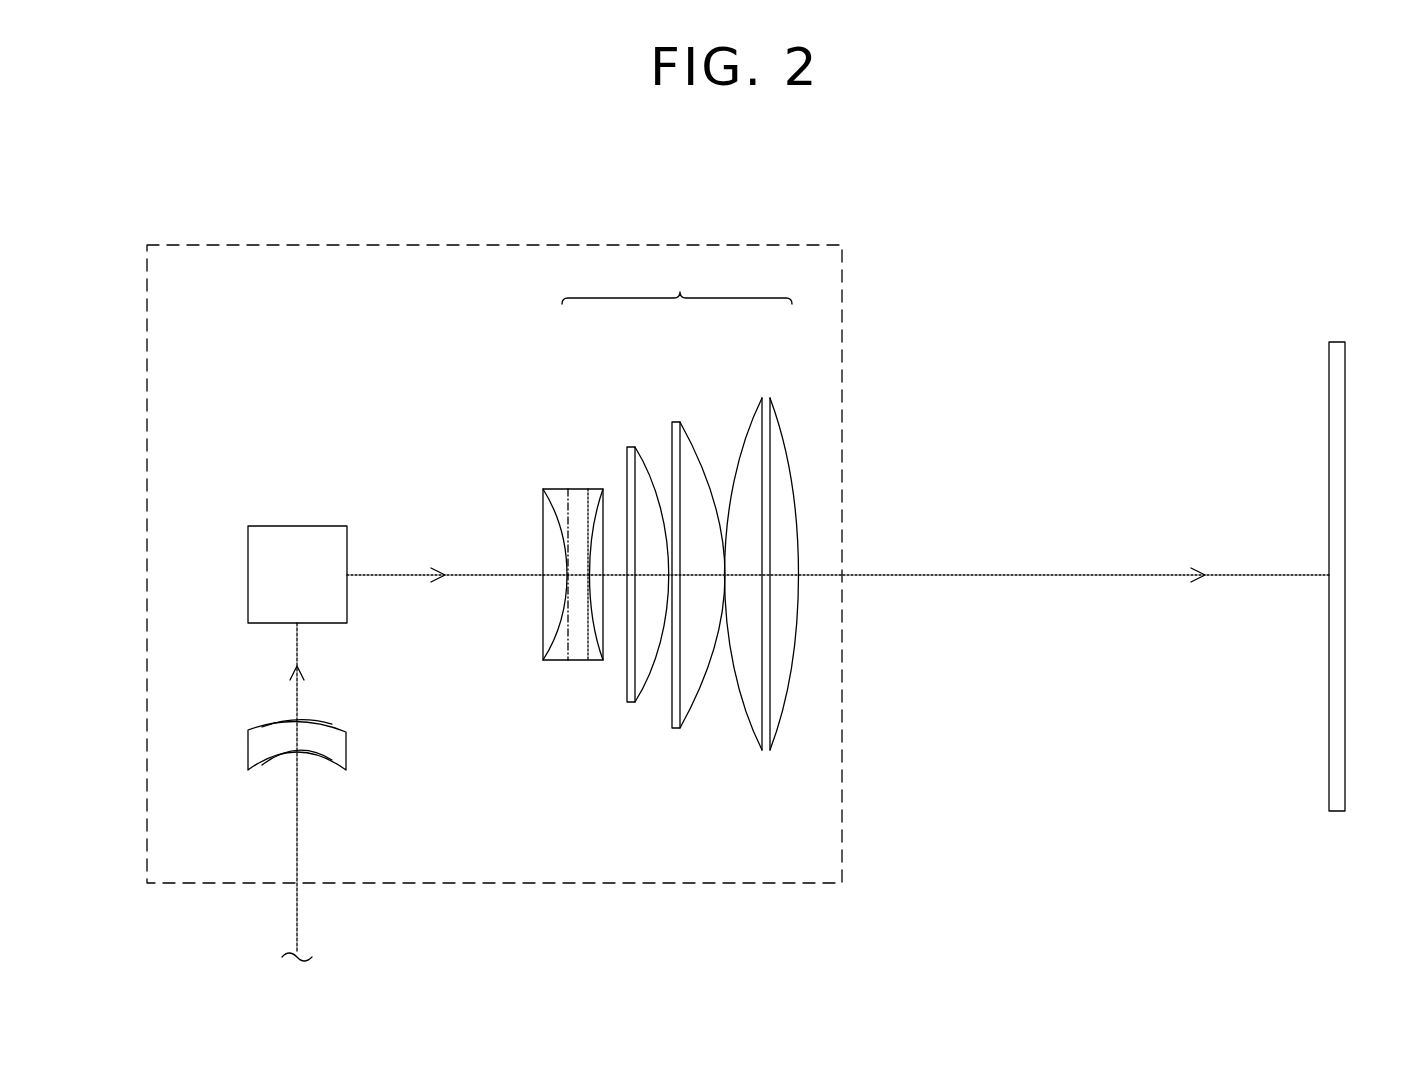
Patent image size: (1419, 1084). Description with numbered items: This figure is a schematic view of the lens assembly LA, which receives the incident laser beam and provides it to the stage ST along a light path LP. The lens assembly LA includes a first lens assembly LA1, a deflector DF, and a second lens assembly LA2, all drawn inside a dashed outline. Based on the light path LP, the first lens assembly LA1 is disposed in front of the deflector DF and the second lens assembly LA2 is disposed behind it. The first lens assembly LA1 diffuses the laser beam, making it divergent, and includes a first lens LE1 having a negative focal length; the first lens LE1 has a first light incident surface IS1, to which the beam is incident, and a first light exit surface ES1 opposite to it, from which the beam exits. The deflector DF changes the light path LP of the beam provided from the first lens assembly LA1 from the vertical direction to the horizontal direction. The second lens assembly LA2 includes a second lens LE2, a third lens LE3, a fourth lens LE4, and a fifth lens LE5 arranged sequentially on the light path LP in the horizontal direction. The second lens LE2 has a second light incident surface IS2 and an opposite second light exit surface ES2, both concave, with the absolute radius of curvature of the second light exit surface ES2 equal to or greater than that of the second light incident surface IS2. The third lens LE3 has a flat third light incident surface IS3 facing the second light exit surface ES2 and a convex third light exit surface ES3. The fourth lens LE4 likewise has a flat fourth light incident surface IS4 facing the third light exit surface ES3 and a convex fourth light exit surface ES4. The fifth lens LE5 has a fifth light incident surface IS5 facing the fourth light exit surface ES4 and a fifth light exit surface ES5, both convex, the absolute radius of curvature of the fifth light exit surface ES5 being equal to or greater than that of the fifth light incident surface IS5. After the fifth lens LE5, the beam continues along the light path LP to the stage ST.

The lens assembly LA is at (745, 245).
The first lens assembly LA1 is at (256, 701).
The second lens assembly LA2 is at (668, 562).
The deflector DF is at (313, 526).
The first lens LE1 is at (248, 745).
The first light exit surface ES1 is at (333, 724).
The first light incident surface IS1 is at (320, 755).
The second lens LE2 is at (578, 488).
The second light incident surface IS2 is at (553, 629).
The second light exit surface ES2 is at (598, 637).
The third lens LE3 is at (631, 447).
The third light incident surface IS3 is at (627, 697).
The third light exit surface ES3 is at (641, 700).
The fourth lens LE4 is at (676, 422).
The fourth light incident surface IS4 is at (676, 722).
The fourth light exit surface ES4 is at (700, 708).
The fifth lens LE5 is at (766, 398).
The fifth light incident surface IS5 is at (755, 743).
The fifth light exit surface ES5 is at (786, 728).
The light path LP is at (996, 574).
The stage ST is at (1337, 342).